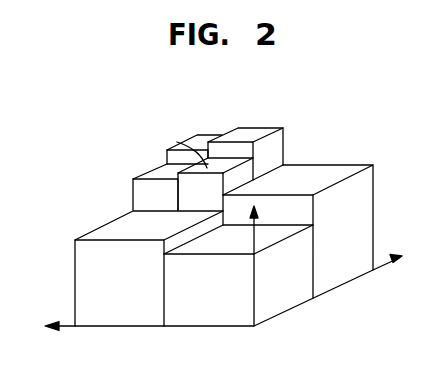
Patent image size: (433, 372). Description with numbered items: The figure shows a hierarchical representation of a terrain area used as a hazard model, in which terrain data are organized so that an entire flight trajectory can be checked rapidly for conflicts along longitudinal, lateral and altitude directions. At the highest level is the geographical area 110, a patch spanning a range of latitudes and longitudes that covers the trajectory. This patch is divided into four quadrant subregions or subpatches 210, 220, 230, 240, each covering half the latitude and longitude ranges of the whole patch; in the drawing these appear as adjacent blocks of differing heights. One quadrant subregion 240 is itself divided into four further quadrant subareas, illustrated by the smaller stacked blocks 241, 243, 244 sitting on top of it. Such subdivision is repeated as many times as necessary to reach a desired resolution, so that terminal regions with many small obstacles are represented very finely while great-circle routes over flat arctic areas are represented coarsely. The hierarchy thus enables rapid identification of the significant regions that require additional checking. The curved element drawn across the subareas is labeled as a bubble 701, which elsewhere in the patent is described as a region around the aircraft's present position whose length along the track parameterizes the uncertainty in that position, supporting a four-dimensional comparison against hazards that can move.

The geographical area 110 is at (90, 188).
The quadrant subregion 210 is at (97, 320).
The quadrant subregion 220 is at (197, 320).
The quadrant subregion 230 is at (343, 275).
The quadrant subregion 240 is at (187, 128).
The quadrant subarea 241 is at (166, 166).
The quadrant subarea 243 is at (253, 135).
The quadrant subarea 244 is at (197, 138).
The bubble 701 is at (200, 145).